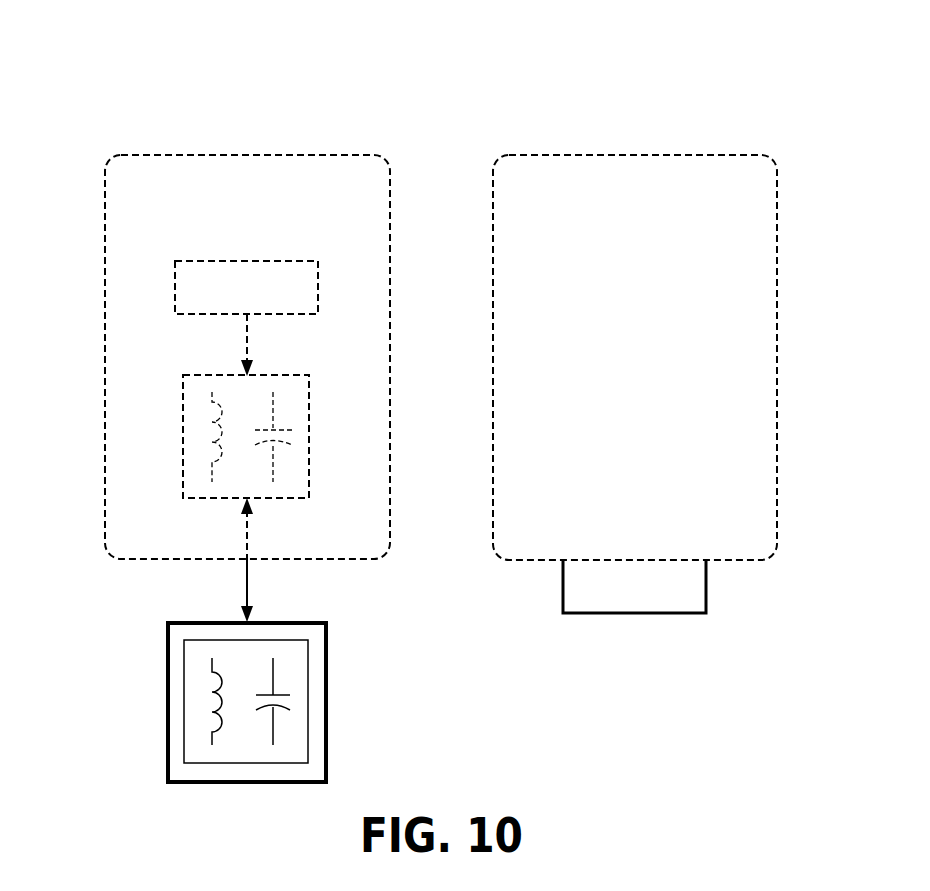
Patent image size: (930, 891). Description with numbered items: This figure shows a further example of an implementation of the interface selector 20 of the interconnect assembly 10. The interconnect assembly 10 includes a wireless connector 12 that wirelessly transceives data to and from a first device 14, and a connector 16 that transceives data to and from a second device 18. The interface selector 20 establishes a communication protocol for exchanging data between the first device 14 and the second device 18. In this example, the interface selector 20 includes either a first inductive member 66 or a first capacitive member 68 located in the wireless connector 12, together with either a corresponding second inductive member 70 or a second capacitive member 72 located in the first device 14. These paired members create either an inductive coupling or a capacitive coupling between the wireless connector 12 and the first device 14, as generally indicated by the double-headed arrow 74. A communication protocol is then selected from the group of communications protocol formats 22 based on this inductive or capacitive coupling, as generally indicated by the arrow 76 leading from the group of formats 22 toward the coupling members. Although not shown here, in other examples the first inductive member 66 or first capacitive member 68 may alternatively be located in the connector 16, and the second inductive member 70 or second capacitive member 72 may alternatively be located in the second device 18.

The interconnect assembly 10 is at (523, 102).
The wireless connector 12 is at (166, 650).
The first device 14 is at (250, 153).
The connector 16 is at (708, 588).
The second device 18 is at (638, 152).
The interface selector 20 is at (158, 494).
The group of different communications protocol formats 22 is at (262, 302).
The first inductive member 66 is at (207, 702).
The first capacitive member 68 is at (294, 702).
The second inductive member 70 is at (207, 436).
The second capacitive member 72 is at (296, 440).
The double-headed arrow 74 is at (250, 590).
The arrow 76 is at (250, 343).